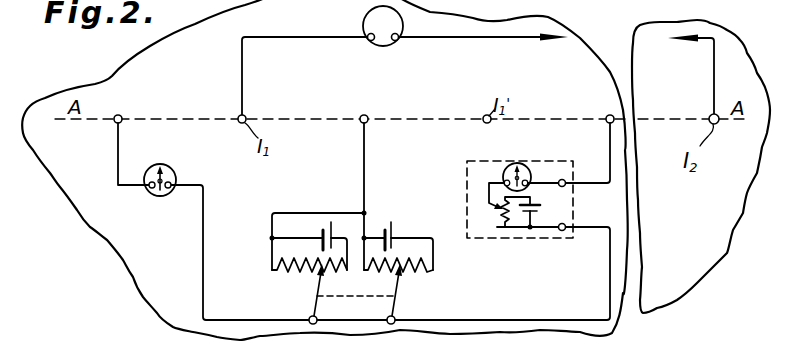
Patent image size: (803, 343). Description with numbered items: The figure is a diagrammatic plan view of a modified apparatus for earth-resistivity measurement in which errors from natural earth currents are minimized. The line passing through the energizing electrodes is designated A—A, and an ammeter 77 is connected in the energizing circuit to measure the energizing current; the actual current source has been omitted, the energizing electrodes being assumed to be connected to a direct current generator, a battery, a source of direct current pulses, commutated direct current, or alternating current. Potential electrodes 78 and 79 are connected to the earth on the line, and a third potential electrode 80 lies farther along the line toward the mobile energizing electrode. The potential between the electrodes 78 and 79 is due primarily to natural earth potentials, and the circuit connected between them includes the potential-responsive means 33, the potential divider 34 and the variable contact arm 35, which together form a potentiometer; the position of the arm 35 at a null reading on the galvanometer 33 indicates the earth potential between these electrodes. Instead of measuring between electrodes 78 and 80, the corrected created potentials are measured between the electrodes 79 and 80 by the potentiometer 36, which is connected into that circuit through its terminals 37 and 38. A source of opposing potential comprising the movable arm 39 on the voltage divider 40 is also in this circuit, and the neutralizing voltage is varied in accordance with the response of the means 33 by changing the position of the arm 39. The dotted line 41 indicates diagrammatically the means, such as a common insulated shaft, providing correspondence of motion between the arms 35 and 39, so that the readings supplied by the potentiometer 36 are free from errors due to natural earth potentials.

The galvanometer 33 is at (175, 170).
The potential divider 34 is at (292, 274).
The movable arm 35 is at (318, 306).
The potentiometer 36 is at (467, 170).
The terminal 37 is at (565, 186).
The terminal 38 is at (560, 231).
The movable arm 39 is at (397, 305).
The potential divider 40 is at (430, 272).
The dotted line 41 is at (355, 287).
The ammeter 77 is at (383, 46).
The potential electrode 78 is at (121, 115).
The potential electrode 79 is at (367, 115).
The third potential electrode 80 is at (608, 115).